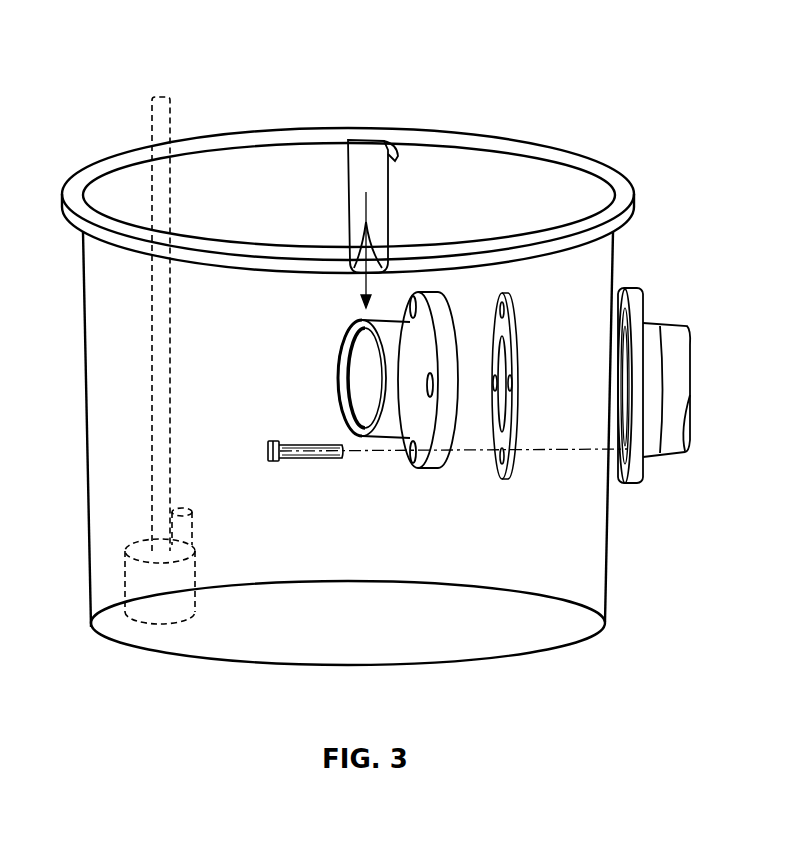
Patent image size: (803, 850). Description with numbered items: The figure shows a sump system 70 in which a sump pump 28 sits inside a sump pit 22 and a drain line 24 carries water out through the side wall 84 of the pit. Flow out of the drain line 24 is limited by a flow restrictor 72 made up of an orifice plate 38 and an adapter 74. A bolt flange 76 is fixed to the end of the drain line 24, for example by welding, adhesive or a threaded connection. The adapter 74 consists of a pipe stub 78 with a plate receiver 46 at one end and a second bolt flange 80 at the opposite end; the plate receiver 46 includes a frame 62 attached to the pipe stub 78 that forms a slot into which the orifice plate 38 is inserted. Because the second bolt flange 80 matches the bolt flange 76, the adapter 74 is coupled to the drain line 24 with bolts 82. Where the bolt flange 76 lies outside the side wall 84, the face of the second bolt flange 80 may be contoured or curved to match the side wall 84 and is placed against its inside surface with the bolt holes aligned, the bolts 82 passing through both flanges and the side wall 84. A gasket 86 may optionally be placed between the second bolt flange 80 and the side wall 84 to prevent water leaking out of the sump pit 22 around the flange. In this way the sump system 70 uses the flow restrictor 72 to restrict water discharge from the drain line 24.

The sump system 70 is at (207, 54).
The sump pit 22 is at (378, 633).
The side wall 84 is at (608, 563).
The sump pump 28 is at (126, 568).
The orifice plate 38 is at (356, 201).
The frame 62 is at (345, 320).
The plate receiver 46 is at (338, 335).
The pipe stub 78 is at (392, 425).
The second bolt flange 80 is at (455, 320).
The gasket 86 is at (519, 322).
The bolts 82 is at (268, 456).
The bolt flange 76 is at (633, 287).
The drain line 24 is at (673, 442).
The flow restrictor 72 is at (302, 359).
The adapter 74 is at (425, 498).